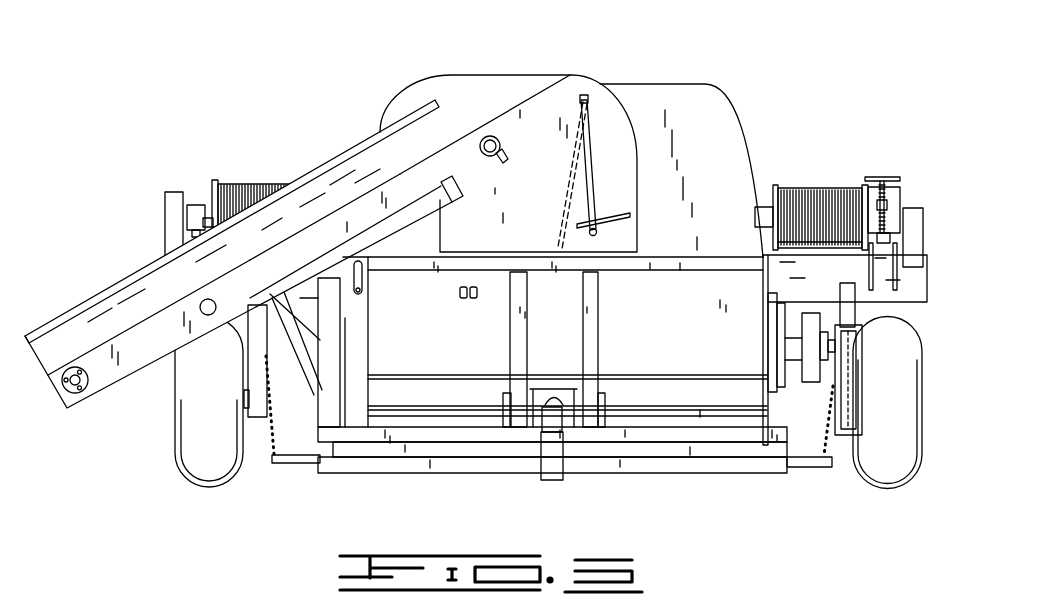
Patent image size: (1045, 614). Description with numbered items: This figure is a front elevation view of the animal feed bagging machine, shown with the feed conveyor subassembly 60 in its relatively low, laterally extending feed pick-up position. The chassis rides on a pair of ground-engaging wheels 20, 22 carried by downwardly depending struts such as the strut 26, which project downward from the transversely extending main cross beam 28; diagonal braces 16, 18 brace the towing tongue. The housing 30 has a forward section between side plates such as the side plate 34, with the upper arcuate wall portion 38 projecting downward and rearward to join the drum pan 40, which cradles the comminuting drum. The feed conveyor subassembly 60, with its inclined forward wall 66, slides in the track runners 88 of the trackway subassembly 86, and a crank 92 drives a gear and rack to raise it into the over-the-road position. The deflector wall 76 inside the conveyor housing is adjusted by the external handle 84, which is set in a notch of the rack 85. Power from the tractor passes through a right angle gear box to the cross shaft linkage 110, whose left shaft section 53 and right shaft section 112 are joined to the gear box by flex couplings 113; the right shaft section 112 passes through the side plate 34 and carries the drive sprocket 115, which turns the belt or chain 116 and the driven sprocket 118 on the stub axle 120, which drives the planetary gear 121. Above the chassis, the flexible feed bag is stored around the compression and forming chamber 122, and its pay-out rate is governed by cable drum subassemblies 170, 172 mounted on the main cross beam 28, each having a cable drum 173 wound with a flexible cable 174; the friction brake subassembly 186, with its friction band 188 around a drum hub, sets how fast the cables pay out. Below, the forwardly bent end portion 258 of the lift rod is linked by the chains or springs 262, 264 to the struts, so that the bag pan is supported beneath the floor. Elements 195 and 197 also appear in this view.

The diagonal brace 16 is at (589, 308).
The diagonal brace 18 is at (517, 309).
The ground-engaging wheel 20 is at (882, 468).
The ground-engaging wheel 22 is at (195, 454).
The downwardly depending strut 26 is at (258, 380).
The main cross beam 28 is at (908, 292).
The housing 30 is at (513, 68).
The side plate 34 is at (762, 337).
The upper arcuate wall portion 38 is at (445, 333).
The drum pan 40 is at (478, 390).
The left shaft section 53 is at (414, 408).
The feed conveyor subassembly 60 is at (81, 298).
The inclined forward wall 66 is at (323, 175).
The deflector wall 76 is at (566, 196).
The handle 84 is at (592, 157).
The rack 85 is at (612, 213).
The trackway subassembly 86 is at (394, 205).
The track runner 88 is at (317, 247).
The crank 92 is at (362, 282).
The cross shaft linkage 110 is at (692, 420).
The right shaft section 112 is at (652, 408).
The flex coupling 113 is at (506, 396).
The drive sprocket 115 is at (857, 413).
The belt or chain 116 is at (851, 377).
The driven sprocket 118 is at (860, 356).
The stub axle 120 is at (829, 340).
The planetary gear 121 is at (792, 342).
The compression and forming chamber 122 is at (657, 80).
The cable drum subassembly 170 is at (805, 181).
The cable drum subassembly 172 is at (229, 180).
The cable drum 173 is at (219, 194).
The flexible cable 174 is at (254, 192).
The friction brake subassembly 186 is at (875, 172).
The friction band 188 is at (893, 192).
The nut 195 is at (883, 180).
The post 197 is at (161, 216).
The forwardly bent end portion 258 is at (293, 464).
The chain or helical spring element 262 is at (272, 437).
The chain or helical spring element 264 is at (833, 452).